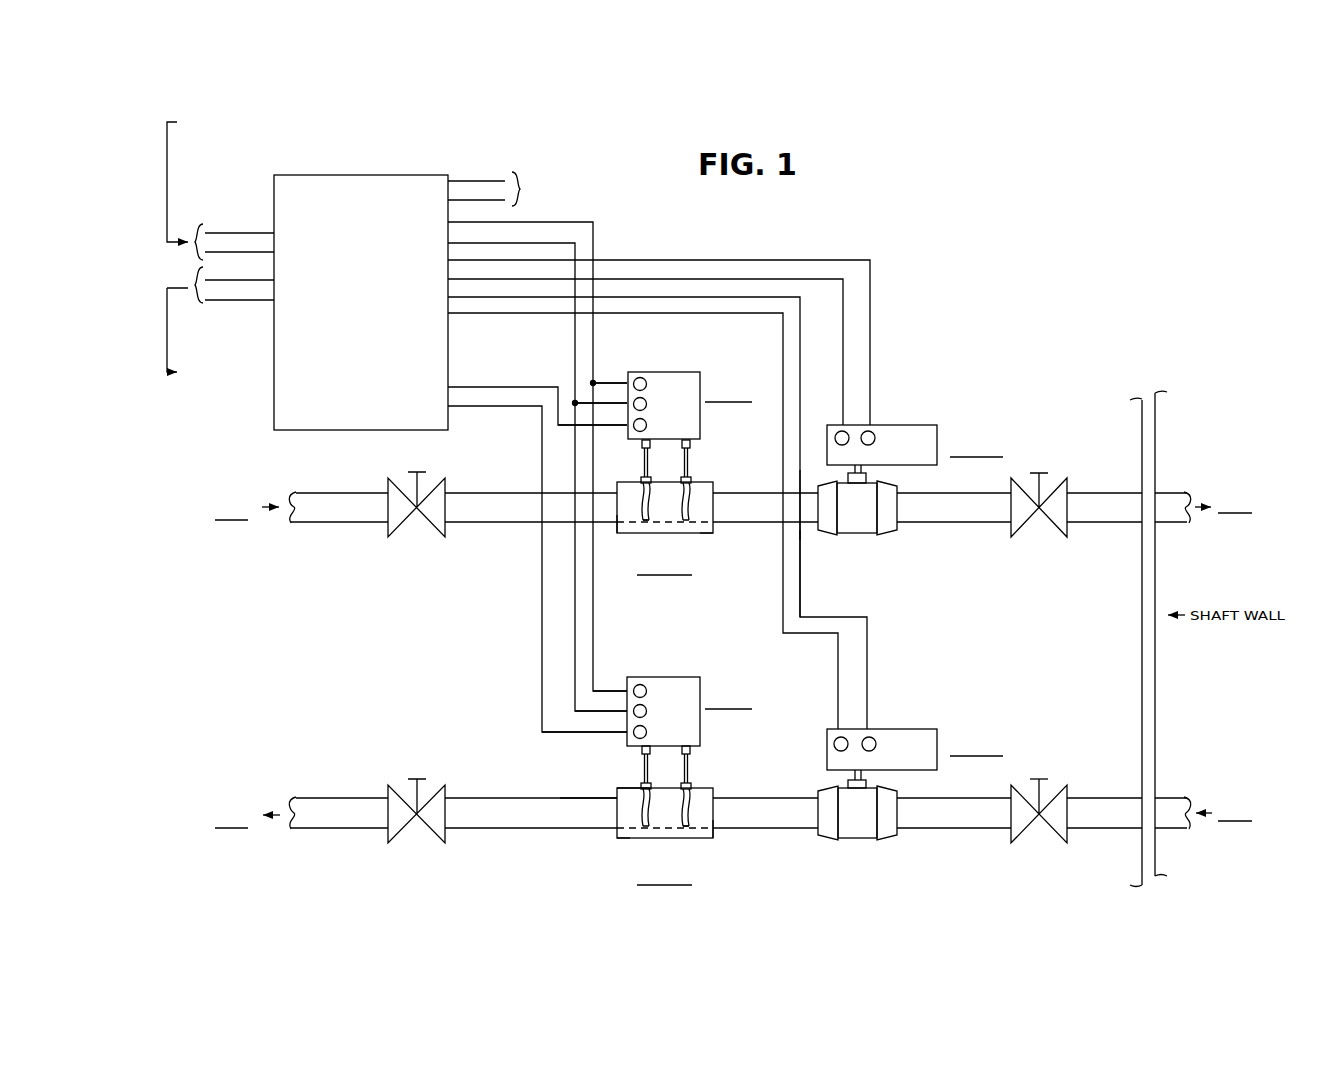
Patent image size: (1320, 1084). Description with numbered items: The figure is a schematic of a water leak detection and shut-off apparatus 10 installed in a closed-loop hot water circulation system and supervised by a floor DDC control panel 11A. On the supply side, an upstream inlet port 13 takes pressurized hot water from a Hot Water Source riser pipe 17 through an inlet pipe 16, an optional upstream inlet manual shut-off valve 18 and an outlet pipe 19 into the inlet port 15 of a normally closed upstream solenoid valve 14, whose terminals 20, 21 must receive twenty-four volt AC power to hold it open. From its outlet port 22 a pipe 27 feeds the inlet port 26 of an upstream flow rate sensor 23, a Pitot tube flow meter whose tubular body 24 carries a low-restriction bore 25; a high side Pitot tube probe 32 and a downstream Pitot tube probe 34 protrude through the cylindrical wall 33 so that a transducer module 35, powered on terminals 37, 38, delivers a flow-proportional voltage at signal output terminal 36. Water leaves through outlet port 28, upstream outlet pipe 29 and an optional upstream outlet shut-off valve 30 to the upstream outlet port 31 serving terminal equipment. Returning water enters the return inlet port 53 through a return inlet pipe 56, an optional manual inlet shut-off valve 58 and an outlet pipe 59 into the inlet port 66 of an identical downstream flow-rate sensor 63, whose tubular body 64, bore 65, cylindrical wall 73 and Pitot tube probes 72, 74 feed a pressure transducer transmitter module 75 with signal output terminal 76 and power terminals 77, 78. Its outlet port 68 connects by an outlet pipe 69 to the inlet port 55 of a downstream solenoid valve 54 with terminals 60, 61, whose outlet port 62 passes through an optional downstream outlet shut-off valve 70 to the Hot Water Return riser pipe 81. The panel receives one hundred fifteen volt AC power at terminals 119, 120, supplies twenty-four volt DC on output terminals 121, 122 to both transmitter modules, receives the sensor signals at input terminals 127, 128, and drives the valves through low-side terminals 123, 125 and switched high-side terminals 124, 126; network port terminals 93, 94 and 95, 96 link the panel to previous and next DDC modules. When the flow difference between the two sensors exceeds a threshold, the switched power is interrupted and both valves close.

The water leak detection and shut-off apparatus 10 is at (948, 275).
The DDC control panel 11A is at (450, 172).
The upstream inlet port 13 is at (1058, 845).
The upstream solenoid valve 14 is at (838, 844).
The inlet port of upstream solenoid valve 15 is at (899, 832).
The inlet pipe 16 is at (1097, 797).
The Hot Water Source riser pipe 17 is at (1165, 797).
The upstream inlet manual shut-off valve 18 is at (1057, 792).
The outlet pipe 19 is at (953, 831).
The low-side terminal of upstream solenoid valve 20 is at (868, 727).
The high-side terminal of upstream solenoid valve 21 is at (838, 727).
The outlet port of upstream solenoid valve 22 is at (818, 835).
The upstream flow rate sensor 23 is at (616, 838).
The tubular body 24 is at (614, 795).
The bore 25 is at (621, 843).
The inlet port of sensor bore 26 is at (718, 833).
The pipe 27 is at (745, 797).
The outlet port of sensor bore 28 is at (600, 795).
The upstream outlet pipe 29 is at (482, 797).
The upstream outlet shut-off valve 30 is at (395, 793).
The upstream outlet port 31 is at (305, 797).
The upstream high side Pitot tube probe 32 is at (688, 814).
The cylindrical wall 33 is at (700, 805).
The downstream Pitot tube probe 34 is at (645, 808).
The transducer module 35 is at (683, 677).
The signal output terminal 36 is at (618, 735).
The input power terminal 37 is at (605, 688).
The input power terminal 38 is at (612, 709).
The return inlet port 53 is at (333, 532).
The downstream solenoid valve 54 is at (868, 498).
The inlet port of downstream solenoid valve 55 is at (803, 532).
The return inlet pipe 56 is at (330, 492).
The manual inlet shut-off valve 58 is at (398, 528).
The outlet pipe 59 is at (492, 523).
The low-side terminal of downstream solenoid valve 60 is at (870, 423).
The high-side terminal of downstream solenoid valve 61 is at (843, 423).
The outlet port of downstream solenoid valve 62 is at (899, 525).
The downstream flow-rate sensor 63 is at (714, 481).
The tubular body 64 is at (645, 524).
The bore 65 is at (713, 541).
The inlet port of downstream flow-rate sensor 66 is at (617, 527).
The outlet port of downstream flow-rate sensor 68 is at (729, 525).
The outlet pipe 69 is at (806, 490).
The downstream outlet shut-off valve 70 is at (1053, 490).
The upstream Pitot tube probe 72 is at (640, 492).
The cylindrical wall 73 is at (626, 503).
The downstream Pitot tube probe 74 is at (688, 505).
The pressure transducer transmitter module 75 is at (688, 371).
The signal output terminal 76 is at (615, 427).
The line terminal 77 is at (600, 380).
The ground terminal 78 is at (611, 402).
The Hot Water Return riser pipe 81 is at (1165, 492).
The network port terminal 93 is at (248, 232).
The network port terminal 94 is at (236, 251).
The network port terminal 95 is at (243, 279).
The network port terminal 96 is at (240, 302).
The power input terminal 119 is at (457, 178).
The power input terminal 120 is at (460, 203).
The output terminal 121 is at (455, 220).
The output terminal 122 is at (455, 241).
The low-side 24-AC terminal 123 is at (455, 258).
The switched 24-AC high-side terminal 124 is at (455, 277).
The low-side 24-AC terminal 125 is at (455, 295).
The switched 24-AC high-side terminal 126 is at (455, 311).
The input terminal 127 is at (455, 386).
The input terminal 128 is at (455, 409).